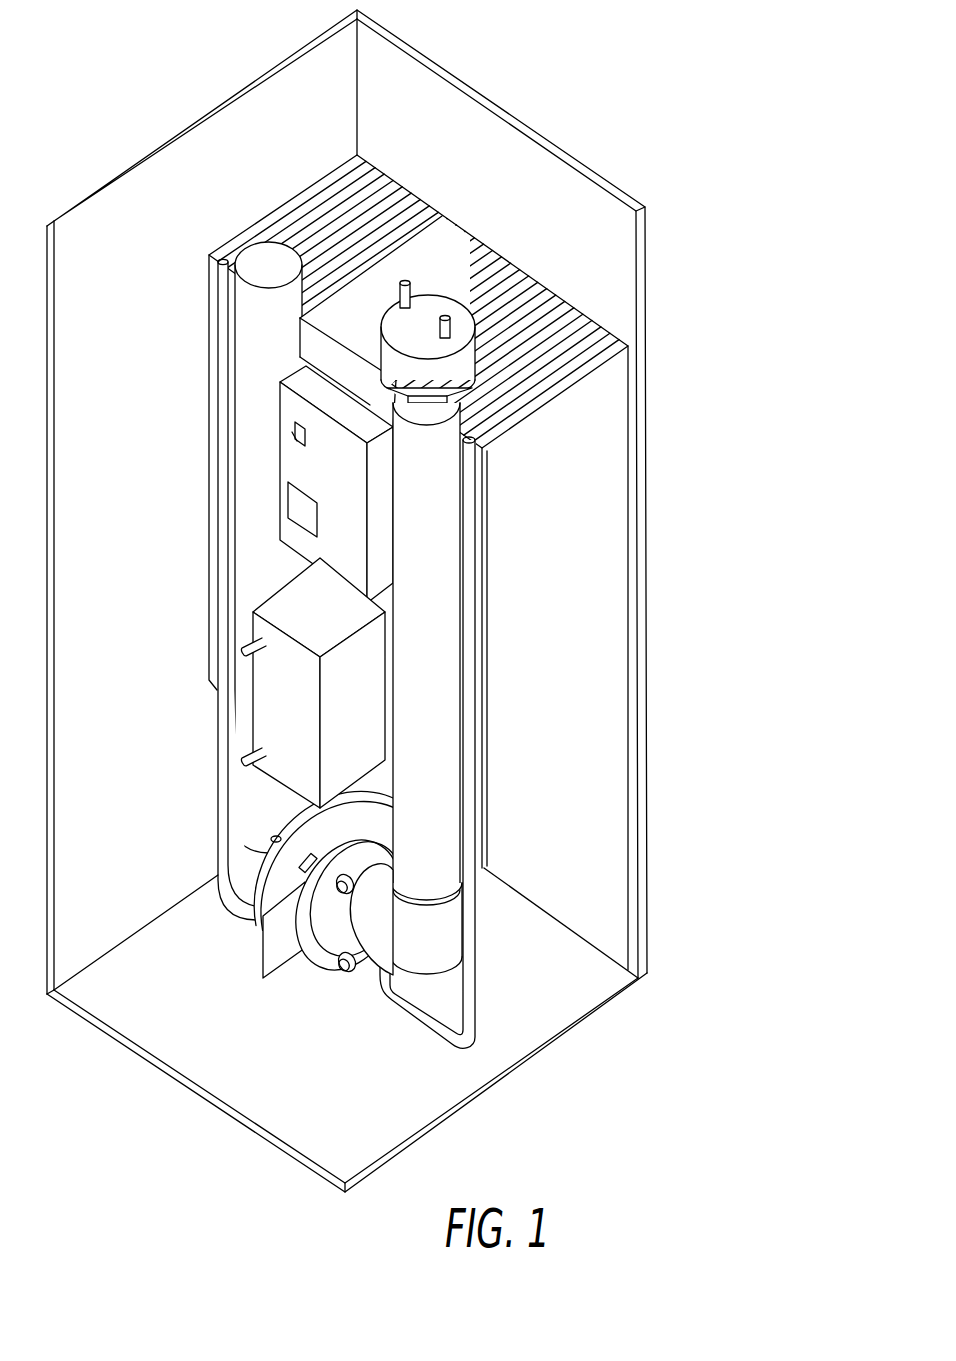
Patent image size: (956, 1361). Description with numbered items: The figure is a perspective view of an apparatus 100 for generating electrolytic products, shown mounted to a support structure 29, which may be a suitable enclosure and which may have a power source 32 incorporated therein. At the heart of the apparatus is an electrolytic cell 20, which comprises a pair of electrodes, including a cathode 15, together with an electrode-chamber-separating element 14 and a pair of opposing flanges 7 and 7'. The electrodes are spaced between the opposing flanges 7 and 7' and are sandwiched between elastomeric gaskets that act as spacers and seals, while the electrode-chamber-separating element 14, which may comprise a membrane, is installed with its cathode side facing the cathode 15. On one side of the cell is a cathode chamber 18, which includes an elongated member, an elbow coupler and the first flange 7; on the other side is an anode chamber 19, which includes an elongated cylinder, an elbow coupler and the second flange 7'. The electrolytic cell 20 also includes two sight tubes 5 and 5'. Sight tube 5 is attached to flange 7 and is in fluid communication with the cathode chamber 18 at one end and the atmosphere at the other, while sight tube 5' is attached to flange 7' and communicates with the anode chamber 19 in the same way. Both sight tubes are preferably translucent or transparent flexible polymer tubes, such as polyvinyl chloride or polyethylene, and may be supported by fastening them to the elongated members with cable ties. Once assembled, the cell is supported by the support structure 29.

The refrigeration unit assembly 100 is at (547, 55).
The support structure 29 is at (620, 274).
The cathode chamber 18 is at (163, 692).
The sight tube 5 is at (212, 589).
The sight tube 5' is at (455, 742).
The power source 32 is at (362, 740).
The electrode-chamber-separating element 14 is at (275, 840).
The flange 7 is at (338, 893).
The flange 7' is at (348, 936).
The cathode 15 is at (264, 963).
The electrolytic cell 20 is at (276, 1010).
The anode chamber 19 is at (492, 927).